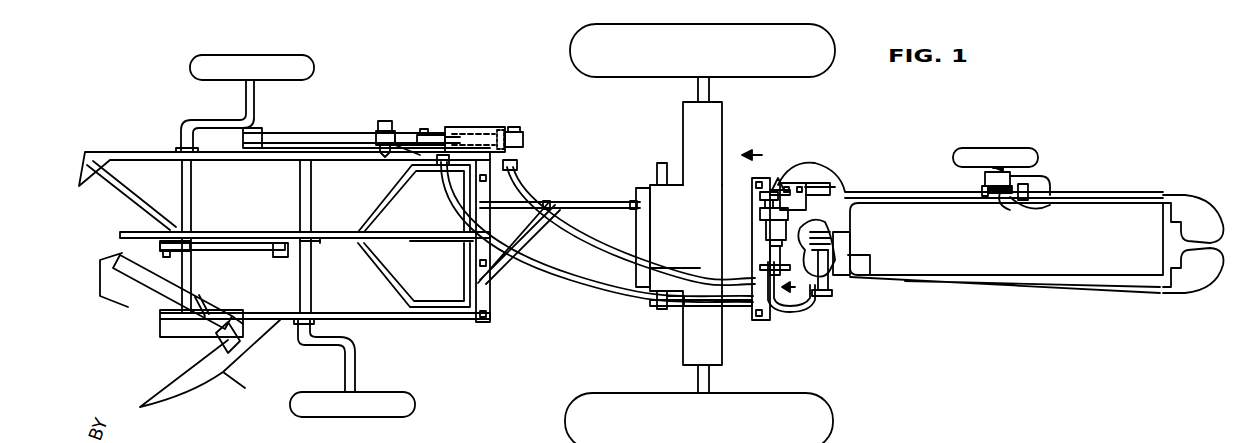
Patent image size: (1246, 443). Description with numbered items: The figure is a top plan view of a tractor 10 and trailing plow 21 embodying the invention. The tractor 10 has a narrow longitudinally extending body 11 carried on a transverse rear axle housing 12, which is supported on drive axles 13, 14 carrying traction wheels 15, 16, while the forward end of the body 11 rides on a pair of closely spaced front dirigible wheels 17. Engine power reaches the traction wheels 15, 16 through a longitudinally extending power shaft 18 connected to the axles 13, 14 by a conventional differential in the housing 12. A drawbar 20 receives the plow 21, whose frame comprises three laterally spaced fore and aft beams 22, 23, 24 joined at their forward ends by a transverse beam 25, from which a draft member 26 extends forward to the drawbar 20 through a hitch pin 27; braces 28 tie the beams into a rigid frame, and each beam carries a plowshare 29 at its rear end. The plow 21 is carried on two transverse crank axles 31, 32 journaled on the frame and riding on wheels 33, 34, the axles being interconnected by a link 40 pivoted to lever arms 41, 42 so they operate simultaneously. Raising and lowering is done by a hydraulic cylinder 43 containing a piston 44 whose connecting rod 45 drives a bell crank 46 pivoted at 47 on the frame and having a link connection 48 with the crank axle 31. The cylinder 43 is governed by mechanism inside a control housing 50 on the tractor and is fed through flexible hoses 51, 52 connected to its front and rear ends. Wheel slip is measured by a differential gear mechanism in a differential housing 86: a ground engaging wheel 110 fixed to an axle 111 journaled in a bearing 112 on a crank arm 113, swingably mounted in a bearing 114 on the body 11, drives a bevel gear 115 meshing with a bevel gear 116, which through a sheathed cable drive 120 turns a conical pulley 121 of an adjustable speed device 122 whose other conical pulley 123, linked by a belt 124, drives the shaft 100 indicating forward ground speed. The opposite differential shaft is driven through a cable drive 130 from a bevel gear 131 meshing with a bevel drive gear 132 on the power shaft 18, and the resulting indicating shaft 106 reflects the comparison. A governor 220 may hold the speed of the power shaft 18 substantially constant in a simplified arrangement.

The tractor 10 is at (1137, 150).
The body 11 is at (1072, 250).
The rear axle housing 12 is at (715, 137).
The drive axle 13 is at (703, 91).
The drive axle 14 is at (698, 378).
The traction wheel 15 is at (828, 66).
The traction wheel 16 is at (820, 408).
The front dirigible wheels 17 is at (1196, 232).
The power shaft 18 is at (814, 232).
The drawbar 20 is at (645, 232).
The plow 21 is at (525, 152).
The beam 22 is at (150, 158).
The beam 23 is at (260, 234).
The beam 24 is at (400, 320).
The transverse beam 25 is at (483, 223).
The draft member 26 is at (592, 205).
The hitch pin 27 is at (638, 188).
The braces 28 is at (456, 184).
The plowshare 29 is at (140, 308).
The crank axle 31 is at (204, 122).
The crank axle 32 is at (352, 372).
The wheel 33 is at (312, 68).
The wheel 34 is at (408, 412).
The link 40 is at (255, 248).
The lever arm 41 is at (190, 248).
The lever arm 42 is at (322, 248).
The hydraulic cylinder 43 is at (485, 128).
The piston 44 is at (508, 130).
The connecting rod 45 is at (455, 130).
The bell crank 46 is at (403, 135).
The pivot 47 is at (380, 121).
The link connection 48 is at (312, 134).
The control housing 50 is at (775, 320).
The flexible hose 51 is at (700, 300).
The flexible hose 52 is at (700, 278).
The differential housing 86 is at (768, 231).
The drive shaft 100 is at (765, 213).
The shaft 106 is at (768, 252).
The ground engaging wheel 110 is at (1028, 157).
The axle 111 is at (990, 180).
The bearing 112 is at (1000, 172).
The crank arm 113 is at (1036, 176).
The bearing 114 is at (1053, 192).
The bevel gear 115 is at (1012, 195).
The bevel gear 116 is at (1040, 210).
The flexible sheathed power transmitting cable drive 120 is at (960, 194).
The conical pulley 121 is at (803, 176).
The adjustable speed device 122 is at (812, 190).
The conical pulley 123 is at (768, 195).
The power transmitting belt 124 is at (780, 190).
The sheathed flexible power transmitting cable drive 130 is at (800, 312).
The bevel gear 131 is at (827, 290).
The bevel drive gear 132 is at (838, 235).
The governor 220 is at (842, 262).